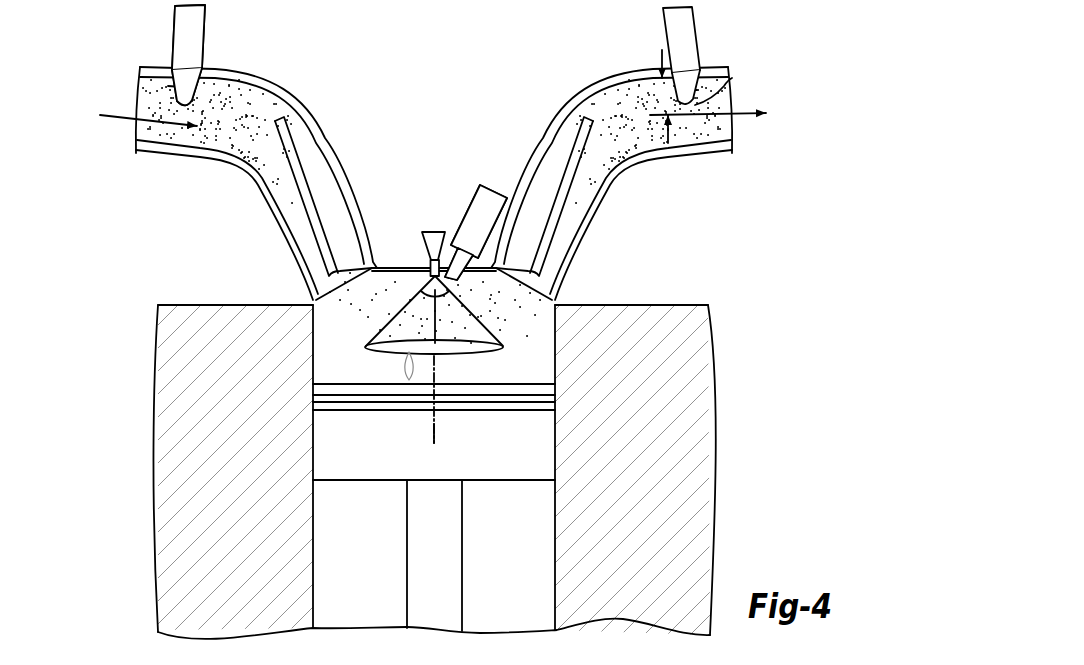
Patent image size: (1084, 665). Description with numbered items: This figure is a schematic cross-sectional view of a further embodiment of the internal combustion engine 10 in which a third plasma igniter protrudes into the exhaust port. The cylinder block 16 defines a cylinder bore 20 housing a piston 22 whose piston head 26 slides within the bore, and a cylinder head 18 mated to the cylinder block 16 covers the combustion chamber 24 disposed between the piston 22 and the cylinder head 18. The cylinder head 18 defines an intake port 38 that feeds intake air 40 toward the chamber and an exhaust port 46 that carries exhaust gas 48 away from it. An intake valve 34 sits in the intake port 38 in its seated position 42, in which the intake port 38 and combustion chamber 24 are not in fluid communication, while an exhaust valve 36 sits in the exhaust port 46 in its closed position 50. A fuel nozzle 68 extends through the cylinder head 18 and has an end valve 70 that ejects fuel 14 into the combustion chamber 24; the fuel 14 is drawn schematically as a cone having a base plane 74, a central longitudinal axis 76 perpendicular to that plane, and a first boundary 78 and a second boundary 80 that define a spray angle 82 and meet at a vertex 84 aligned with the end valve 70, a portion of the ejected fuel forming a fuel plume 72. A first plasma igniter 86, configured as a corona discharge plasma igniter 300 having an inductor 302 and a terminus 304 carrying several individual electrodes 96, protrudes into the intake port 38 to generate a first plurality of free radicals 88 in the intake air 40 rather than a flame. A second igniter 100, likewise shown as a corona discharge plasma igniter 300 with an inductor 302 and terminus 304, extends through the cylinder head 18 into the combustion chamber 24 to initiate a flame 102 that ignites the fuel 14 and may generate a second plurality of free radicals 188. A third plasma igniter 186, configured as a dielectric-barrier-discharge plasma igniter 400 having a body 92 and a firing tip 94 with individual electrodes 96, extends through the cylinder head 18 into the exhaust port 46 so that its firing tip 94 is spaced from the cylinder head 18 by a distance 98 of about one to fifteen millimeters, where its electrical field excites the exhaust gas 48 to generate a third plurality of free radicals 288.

The internal combustion engine 10 is at (85, 36).
The fuel 14 is at (477, 338).
The cylinder block 16 is at (698, 490).
The cylinder head 18 is at (277, 91).
The cylinder bore 20 is at (353, 595).
The piston 22 is at (430, 560).
The combustion chamber 24 is at (335, 336).
The piston head 26 is at (352, 470).
The intake valve 34 is at (309, 198).
The exhaust valve 36 is at (571, 156).
The intake port 38 is at (243, 138).
The intake air 40 is at (125, 118).
The seated position 42 is at (373, 264).
The exhaust port 46 is at (629, 138).
The exhaust gas 48 is at (738, 118).
The closed position 50 is at (563, 296).
The fuel nozzle 68 is at (418, 228).
The end valve 70 is at (430, 268).
The fuel plume 72 is at (510, 357).
The base plane 74 is at (369, 348).
The central longitudinal axis 76 is at (438, 435).
The first boundary 78 is at (402, 306).
The second boundary 80 is at (482, 342).
The spray angle 82 is at (430, 291).
The vertex 84 is at (430, 282).
The first plasma igniter 86 is at (168, 28).
The first plurality of free radicals 88 is at (215, 92).
The body 92 is at (667, 25).
The firing tip 94 is at (697, 90).
The individual electrodes 96 is at (192, 108).
The distance 98 is at (667, 99).
The second igniter 100 is at (476, 184).
The flame 102 is at (407, 360).
The third plasma igniter 186 is at (706, 52).
The second plurality of free radicals 188 is at (555, 309).
The third plurality of free radicals 288 is at (612, 103).
The corona discharge plasma igniter 300 is at (300, 140).
The inductor 302 is at (193, 29).
The terminus 304 is at (168, 86).
The dielectric-barrier-discharge plasma igniter 400 is at (706, 52).